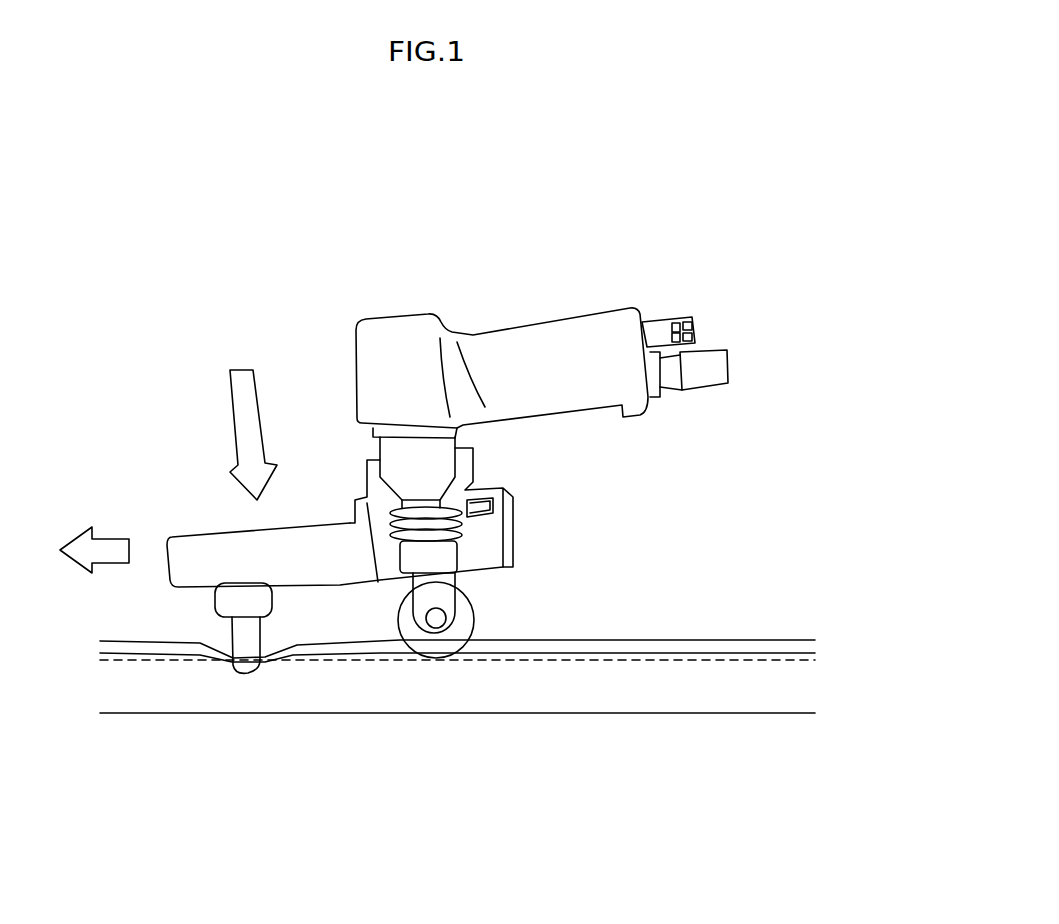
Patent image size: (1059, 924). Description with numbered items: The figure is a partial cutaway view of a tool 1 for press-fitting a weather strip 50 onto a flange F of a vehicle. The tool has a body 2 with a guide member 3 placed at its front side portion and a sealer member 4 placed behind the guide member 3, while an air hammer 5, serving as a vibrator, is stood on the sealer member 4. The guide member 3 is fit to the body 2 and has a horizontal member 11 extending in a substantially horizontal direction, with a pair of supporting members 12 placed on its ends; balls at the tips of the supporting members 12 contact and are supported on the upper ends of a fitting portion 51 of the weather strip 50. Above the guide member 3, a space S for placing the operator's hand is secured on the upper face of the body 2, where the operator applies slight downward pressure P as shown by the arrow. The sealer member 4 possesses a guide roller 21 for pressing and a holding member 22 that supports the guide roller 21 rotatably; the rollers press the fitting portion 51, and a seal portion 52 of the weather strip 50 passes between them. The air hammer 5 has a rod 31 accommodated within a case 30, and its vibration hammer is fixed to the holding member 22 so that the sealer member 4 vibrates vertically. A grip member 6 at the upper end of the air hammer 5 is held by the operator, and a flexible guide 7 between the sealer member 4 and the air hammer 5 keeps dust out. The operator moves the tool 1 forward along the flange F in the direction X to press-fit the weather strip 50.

The tool for press-fitting a weather strip 1 is at (585, 250).
The body 2 is at (308, 553).
The guide member 3 is at (205, 625).
The sealer member 4 is at (498, 686).
The air hammer 5 is at (470, 437).
The grip member 6 is at (665, 415).
The flexible guide 7 is at (366, 478).
The horizontal member 11 is at (256, 605).
The supporting member 12 is at (248, 677).
The guide roller 21 is at (435, 640).
The holding member 22 is at (435, 593).
The case 30 is at (375, 440).
The rod 31 is at (473, 486).
The weather strip 50 is at (457, 651).
The fitting portion 51 is at (627, 698).
The seal portion 52 is at (628, 650).
The space for placing operator's hand S is at (233, 522).
The pressure P is at (253, 417).
The direction X is at (94, 539).
The flange F is at (713, 696).